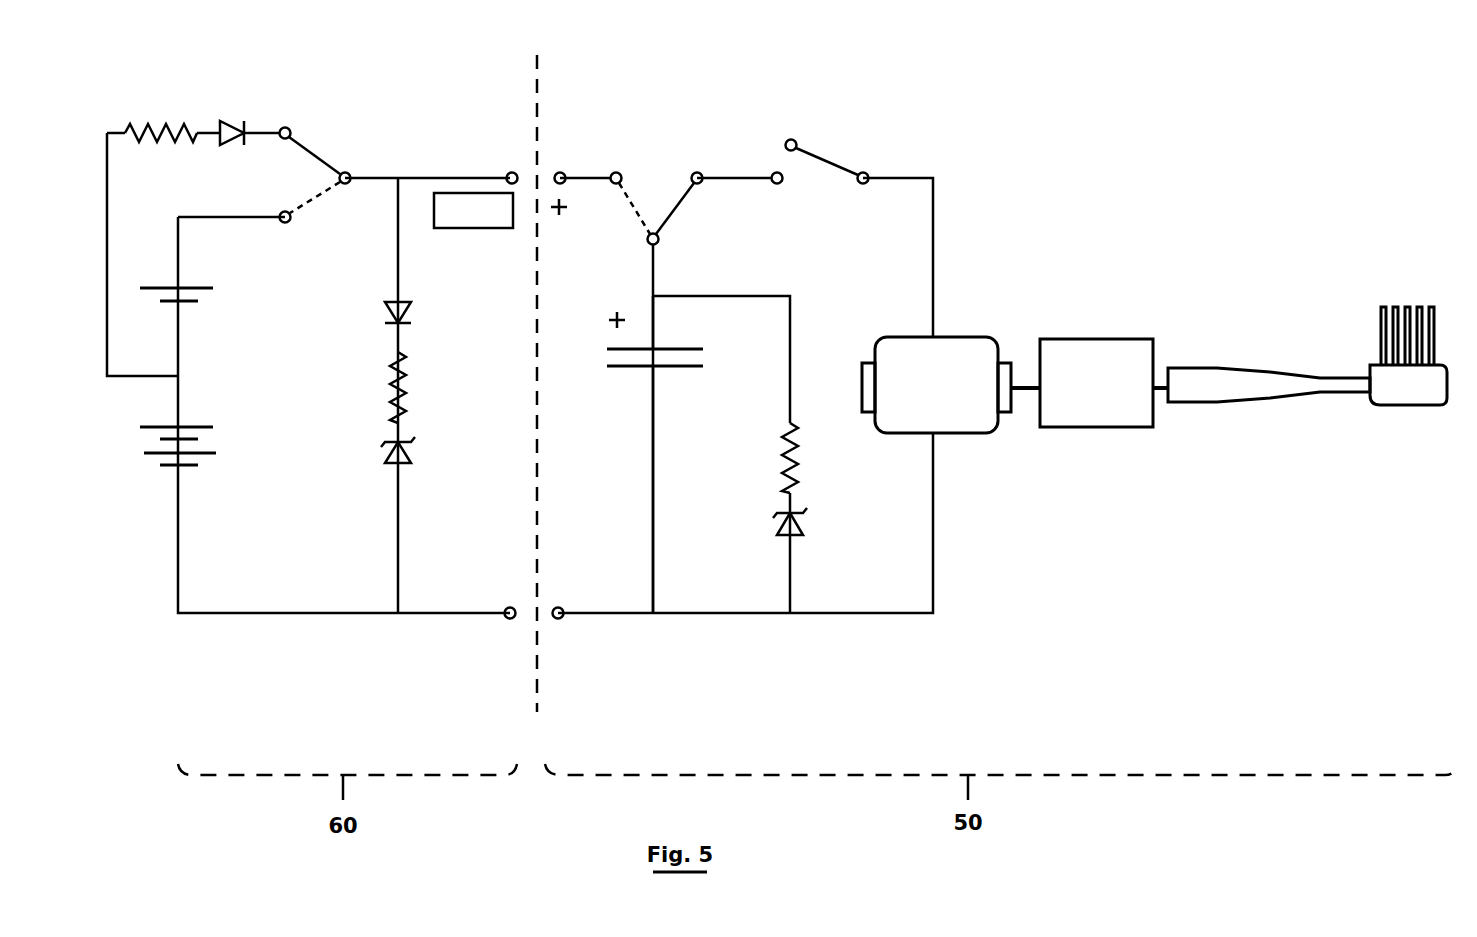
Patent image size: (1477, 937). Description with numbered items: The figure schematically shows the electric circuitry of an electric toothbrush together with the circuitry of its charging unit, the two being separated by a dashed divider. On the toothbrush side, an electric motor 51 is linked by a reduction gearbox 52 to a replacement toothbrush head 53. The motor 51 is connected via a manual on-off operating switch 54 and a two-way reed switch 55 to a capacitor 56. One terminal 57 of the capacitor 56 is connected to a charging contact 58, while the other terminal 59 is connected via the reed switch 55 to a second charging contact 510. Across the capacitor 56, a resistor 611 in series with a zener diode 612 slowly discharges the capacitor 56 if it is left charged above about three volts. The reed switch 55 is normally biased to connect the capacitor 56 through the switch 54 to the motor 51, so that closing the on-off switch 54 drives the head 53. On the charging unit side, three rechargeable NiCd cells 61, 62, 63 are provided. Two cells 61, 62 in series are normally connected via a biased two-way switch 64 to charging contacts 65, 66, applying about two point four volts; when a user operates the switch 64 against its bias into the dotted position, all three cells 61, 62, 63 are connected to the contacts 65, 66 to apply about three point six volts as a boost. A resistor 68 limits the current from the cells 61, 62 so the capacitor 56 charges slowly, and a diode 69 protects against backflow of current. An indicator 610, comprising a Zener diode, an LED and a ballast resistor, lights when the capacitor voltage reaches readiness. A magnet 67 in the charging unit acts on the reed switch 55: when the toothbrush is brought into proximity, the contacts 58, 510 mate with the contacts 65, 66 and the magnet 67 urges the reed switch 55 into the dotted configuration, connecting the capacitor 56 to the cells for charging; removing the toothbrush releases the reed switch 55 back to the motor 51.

The electric motor 51 is at (951, 385).
The reduction gearbox 52 is at (1104, 383).
The toothbrush head 53 is at (1305, 308).
The on-off operating switch 54 is at (772, 148).
The two-way reed switch 55 is at (653, 178).
The capacitor 56 is at (685, 454).
The terminal 57 is at (658, 372).
The charging contact 58 is at (562, 628).
The terminal 59 is at (660, 342).
The charging contact 510 is at (565, 165).
The rechargeable NiCd cell 61 is at (220, 460).
The rechargeable NiCd cell 62 is at (218, 424).
The rechargeable NiCd cell 63 is at (220, 305).
The biased two-way switch 64 is at (323, 155).
The charging contact 65 is at (500, 630).
The charging contact 66 is at (500, 160).
The magnet 67 is at (473, 235).
The resistor 68 is at (170, 115).
The diode 69 is at (230, 110).
The capacitor charged/battery health indicator 610 is at (428, 377).
The resistor 611 is at (770, 543).
The zener diode 612 is at (807, 470).